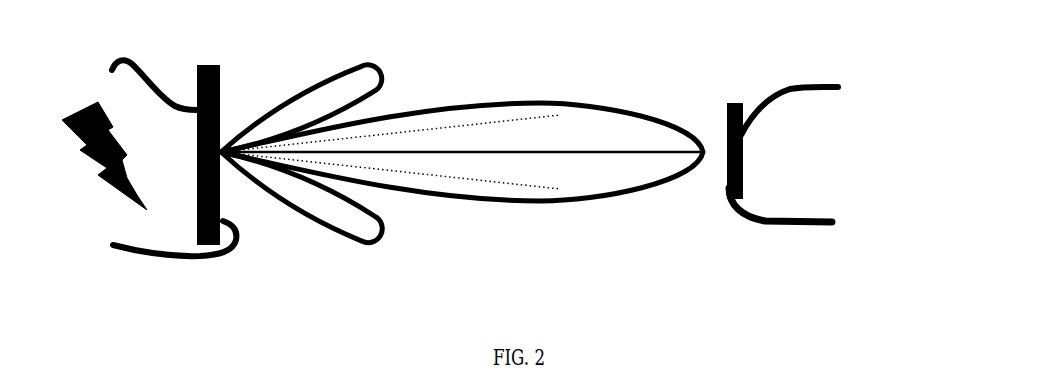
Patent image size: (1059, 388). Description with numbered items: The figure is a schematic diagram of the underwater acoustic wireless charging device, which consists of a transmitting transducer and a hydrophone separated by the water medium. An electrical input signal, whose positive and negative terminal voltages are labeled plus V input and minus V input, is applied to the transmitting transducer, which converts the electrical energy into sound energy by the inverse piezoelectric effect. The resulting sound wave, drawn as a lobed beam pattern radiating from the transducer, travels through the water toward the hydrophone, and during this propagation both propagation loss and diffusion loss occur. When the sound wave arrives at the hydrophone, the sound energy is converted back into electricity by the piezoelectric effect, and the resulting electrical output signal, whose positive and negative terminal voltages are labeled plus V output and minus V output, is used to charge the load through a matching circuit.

The transmitting transducer is at (230, 95).
The element hydrophone is at (707, 100).